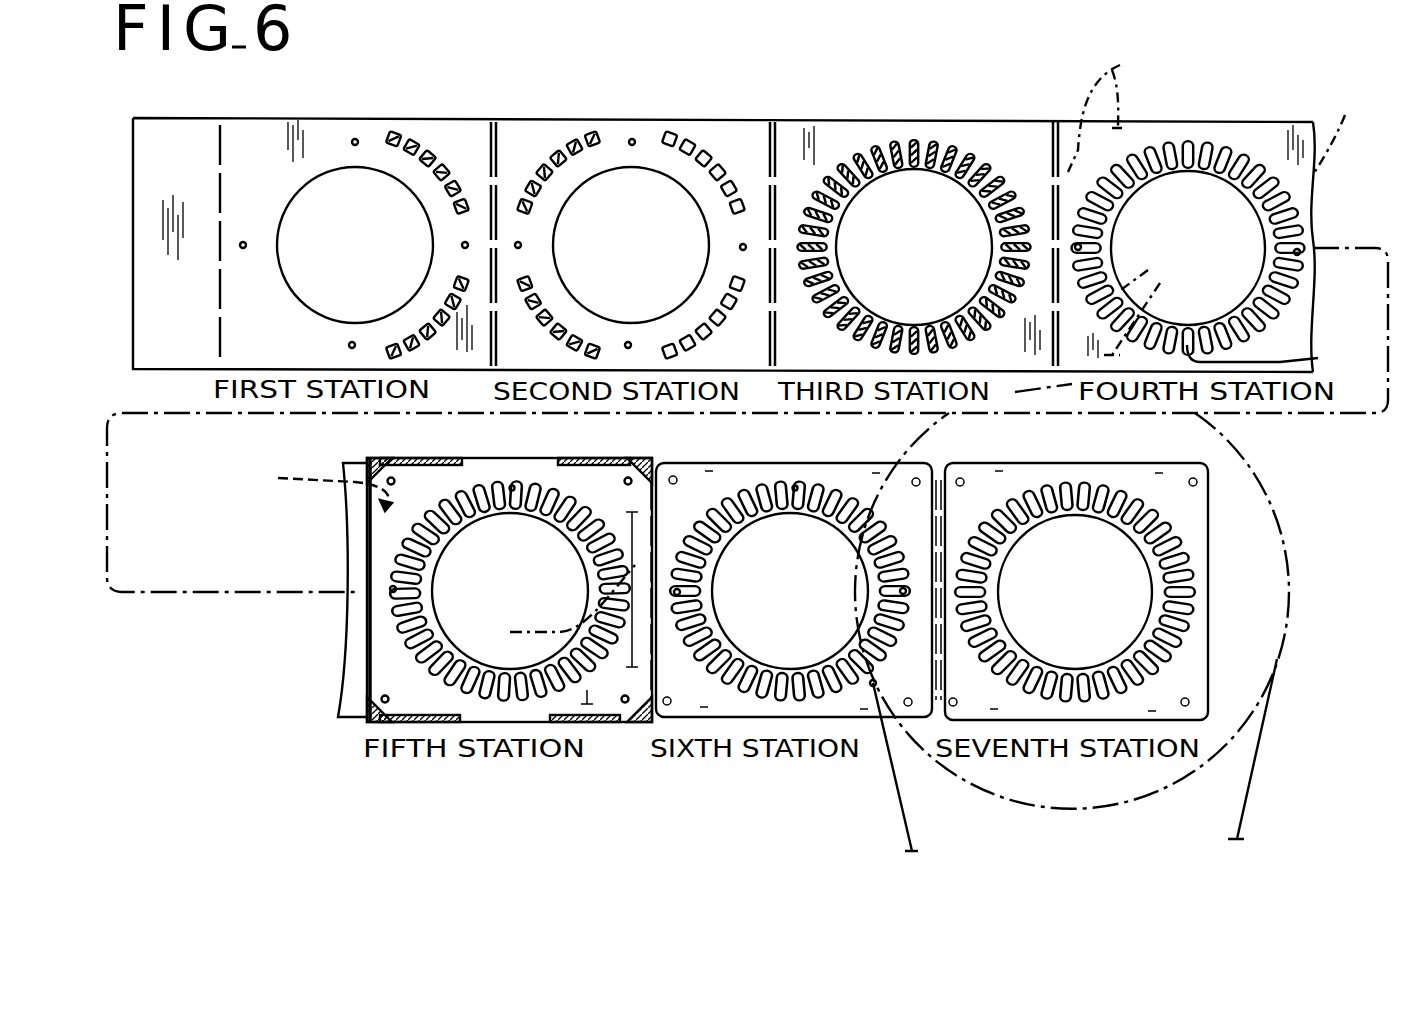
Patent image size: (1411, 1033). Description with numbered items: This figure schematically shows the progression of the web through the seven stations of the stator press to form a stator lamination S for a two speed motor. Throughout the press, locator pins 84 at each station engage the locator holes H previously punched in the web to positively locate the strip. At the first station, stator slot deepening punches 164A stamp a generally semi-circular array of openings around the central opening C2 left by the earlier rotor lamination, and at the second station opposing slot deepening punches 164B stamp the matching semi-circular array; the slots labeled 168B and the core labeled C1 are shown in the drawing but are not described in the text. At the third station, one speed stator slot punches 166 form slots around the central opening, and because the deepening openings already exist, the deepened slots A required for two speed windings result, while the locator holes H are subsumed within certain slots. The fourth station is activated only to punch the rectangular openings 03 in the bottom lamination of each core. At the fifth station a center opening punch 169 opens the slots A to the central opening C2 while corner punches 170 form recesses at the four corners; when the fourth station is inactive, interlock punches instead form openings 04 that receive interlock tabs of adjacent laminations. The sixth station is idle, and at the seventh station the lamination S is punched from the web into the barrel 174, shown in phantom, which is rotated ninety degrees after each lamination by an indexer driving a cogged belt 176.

The locator pins 84 is at (352, 143).
The locator holes H is at (355, 139).
The central opening C2 is at (350, 205).
The stator core C1 is at (505, 542).
The stator slot deepening punches 164A is at (448, 164).
The stator slot deepening punches 164B is at (548, 328).
The slots 168B is at (570, 142).
The one speed stator slot punches 166 is at (1013, 170).
The rectangular openings 03 is at (1219, 200).
The slots A is at (1253, 143).
The corner punches 170 is at (378, 458).
The openings 04 is at (434, 558).
The center opening punch 169 is at (580, 550).
The stator lamination S is at (973, 465).
The barrel 174 is at (1275, 512).
The cogged belt 176 is at (1262, 738).